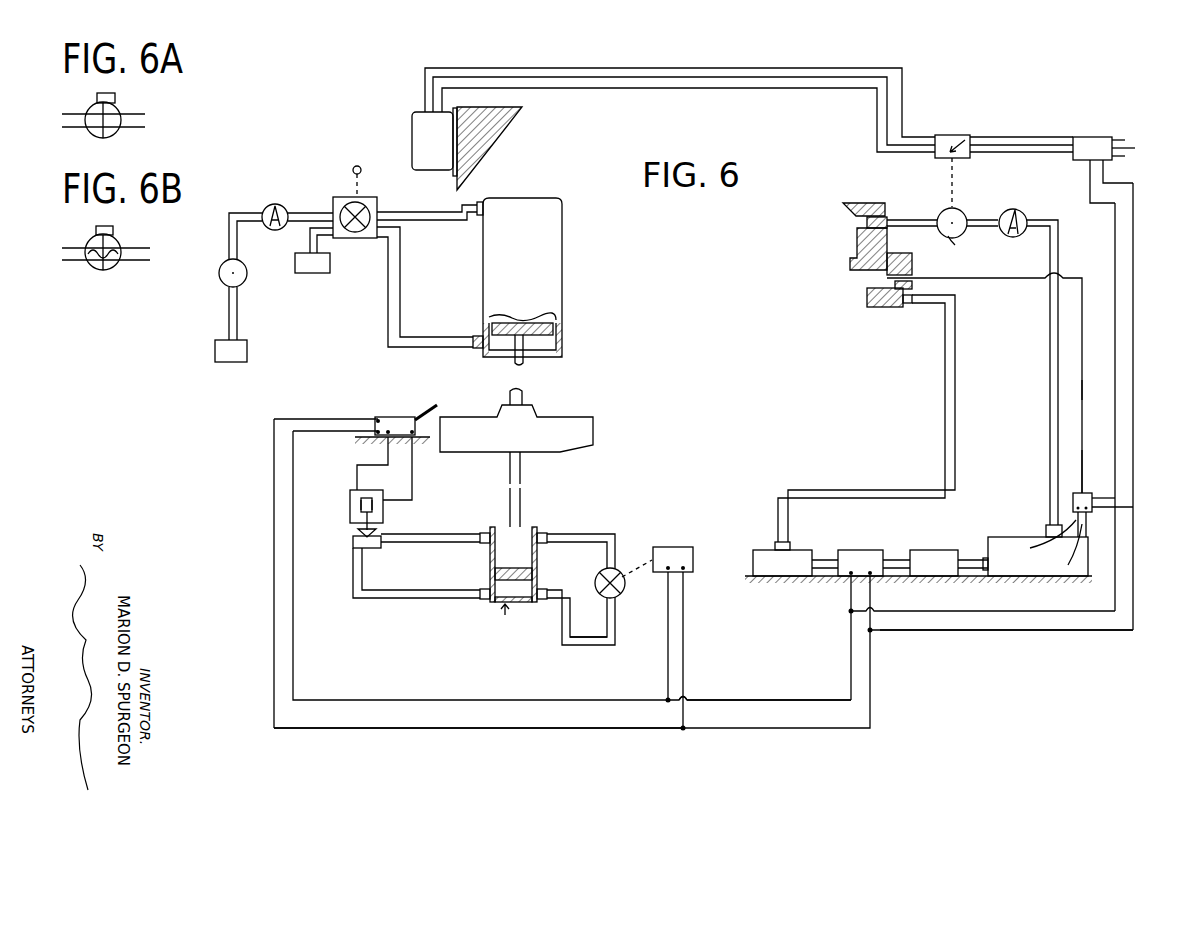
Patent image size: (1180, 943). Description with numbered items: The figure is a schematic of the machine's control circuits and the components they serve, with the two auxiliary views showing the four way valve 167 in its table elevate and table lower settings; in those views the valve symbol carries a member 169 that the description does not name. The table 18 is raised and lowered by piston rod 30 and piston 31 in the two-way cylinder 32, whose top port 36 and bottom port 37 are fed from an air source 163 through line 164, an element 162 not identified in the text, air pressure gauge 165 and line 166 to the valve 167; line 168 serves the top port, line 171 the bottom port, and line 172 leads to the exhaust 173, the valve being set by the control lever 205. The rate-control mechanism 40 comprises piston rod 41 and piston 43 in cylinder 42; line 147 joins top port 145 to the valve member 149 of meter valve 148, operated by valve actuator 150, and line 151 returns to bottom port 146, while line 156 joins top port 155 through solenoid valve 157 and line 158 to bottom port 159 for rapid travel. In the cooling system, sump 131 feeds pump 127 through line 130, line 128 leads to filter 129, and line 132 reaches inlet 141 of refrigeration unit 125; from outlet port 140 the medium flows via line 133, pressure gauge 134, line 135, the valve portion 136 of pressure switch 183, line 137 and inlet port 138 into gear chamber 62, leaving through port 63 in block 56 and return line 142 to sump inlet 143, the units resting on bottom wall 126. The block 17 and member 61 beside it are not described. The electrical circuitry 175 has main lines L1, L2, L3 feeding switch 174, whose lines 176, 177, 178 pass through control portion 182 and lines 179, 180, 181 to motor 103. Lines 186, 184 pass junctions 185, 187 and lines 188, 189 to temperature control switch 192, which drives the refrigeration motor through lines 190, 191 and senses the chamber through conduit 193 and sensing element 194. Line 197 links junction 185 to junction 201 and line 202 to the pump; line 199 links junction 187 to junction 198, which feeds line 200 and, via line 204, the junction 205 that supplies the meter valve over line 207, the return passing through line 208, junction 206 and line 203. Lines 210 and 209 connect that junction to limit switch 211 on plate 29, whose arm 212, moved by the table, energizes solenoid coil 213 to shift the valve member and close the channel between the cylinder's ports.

In FIG. 6, the block 17 is at (857, 248).
In FIG. 6, the table 18 is at (574, 421).
In FIG. 6, the back plate 29 is at (368, 440).
In FIG. 6, the piston rod 30 is at (523, 363).
In FIG. 6, the piston 31 is at (552, 332).
In FIG. 6, the two-way acting cylinder 32 is at (548, 252).
In FIG. 6, the top port 36 is at (479, 216).
In FIG. 6, the bottom port 37 is at (474, 348).
In FIG. 6, the rate-controlling mechanism 40 is at (503, 620).
In FIG. 6, the piston rod 41 is at (521, 470).
In FIG. 6, the two way acting cylinder 42 is at (528, 532).
In FIG. 6, the piston 43 is at (534, 571).
In FIG. 6, the block 56 is at (876, 307).
In FIG. 6, the block 61 is at (893, 258).
In FIG. 6, the gear chamber 62 is at (865, 203).
In FIG. 6, the port 63 is at (906, 304).
In FIG. 6, the motor 103 is at (412, 135).
In FIG. 6, the refrigeration unit 125 is at (1088, 562).
In FIG. 6, the bottom wall 126 is at (786, 578).
In FIG. 6, the pump 127 is at (856, 550).
In FIG. 6, the line 128 is at (892, 560).
In FIG. 6, the filter 129 is at (940, 556).
In FIG. 6, the line 130 is at (826, 578).
In FIG. 6, the sump 131 is at (798, 556).
In FIG. 6, the line 132 is at (975, 576).
In FIG. 6, the line 133 is at (1050, 388).
In FIG. 6, the pressure gauge 134 is at (1022, 218).
In FIG. 6, the line 135 is at (984, 222).
In FIG. 6, the valve portion 136 is at (958, 250).
In FIG. 6, the line 137 is at (938, 224).
In FIG. 6, the drive chamber inlet port 138 is at (882, 222).
In FIG. 6, the outlet port 140 is at (1046, 531).
In FIG. 6, the inlet 141 is at (988, 576).
In FIG. 6, the return line 142 is at (945, 386).
In FIG. 6, the inlet port 143 is at (775, 546).
In FIG. 6, the top port 145 is at (546, 536).
In FIG. 6, the bottom port 146 is at (543, 600).
In FIG. 6, the line 147 is at (592, 536).
In FIG. 6, the meter valve 148 is at (686, 547).
In FIG. 6, the valve member 149 is at (614, 570).
In FIG. 6, the valve actuator 150 is at (657, 573).
In FIG. 6, the line 151 is at (612, 636).
In FIG. 6, the top port 155 is at (486, 544).
In FIG. 6, the line 156 is at (446, 534).
In FIG. 6, the solenoid valve 157 is at (370, 498).
In FIG. 6, the line 158 is at (380, 599).
In FIG. 6, the bottom port 159 is at (482, 600).
In FIG. 6, the valve 162 is at (219, 278).
In FIG. 6, the source of pressurized air 163 is at (247, 352).
In FIG. 6, the line 164 is at (240, 318).
In FIG. 6, the air pressure gauge 165 is at (262, 212).
In FIG. 6A, the line 166 is at (74, 112).
In FIG. 6B, the line 166 is at (78, 246).
In FIG. 6, the line 166 is at (304, 212).
In FIG. 6, the four way valve 167 is at (355, 238).
In FIG. 6A, the line 168 is at (140, 117).
In FIG. 6B, the line 168 is at (142, 250).
In FIG. 6, the line 168 is at (437, 216).
In FIG. 6A, the valve stem 169 is at (118, 98).
In FIG. 6B, the valve stem 169 is at (112, 230).
In FIG. 6A, the line 171 is at (122, 128).
In FIG. 6B, the line 171 is at (126, 262).
In FIG. 6, the line 171 is at (388, 334).
In FIG. 6A, the line 172 is at (78, 126).
In FIG. 6B, the line 172 is at (78, 258).
In FIG. 6, the line 172 is at (310, 238).
In FIG. 6, the exhaust 173 is at (311, 274).
In FIG. 6, the On-Off two speed motor control switch 174 is at (1098, 138).
In FIG. 6, the electrical control circuitry 175 is at (1118, 170).
In FIG. 6, the line 176 is at (992, 150).
In FIG. 6, the line 177 is at (1022, 143).
In FIG. 6, the line 178 is at (1046, 137).
In FIG. 6, the line 179 is at (680, 62).
In FIG. 6, the line 180 is at (694, 82).
In FIG. 6, the line 181 is at (733, 68).
In FIG. 6, the electrical control portion 182 is at (946, 135).
In FIG. 6, the pressure switch 183 is at (968, 134).
In FIG. 6, the line 184 is at (1133, 272).
In FIG. 6, the junction 185 is at (1118, 497).
In FIG. 6, the line 186 is at (1115, 320).
In FIG. 6, the junction 187 is at (1134, 507).
In FIG. 6, the line 188 is at (1090, 493).
In FIG. 6, the line 189 is at (1088, 516).
In FIG. 6, the line 190 is at (1038, 540).
In FIG. 6, the line 191 is at (1061, 550).
In FIG. 6, the temperature control switch 192 is at (1082, 478).
In FIG. 6, the conduit 193 is at (1083, 400).
In FIG. 6, the temperature sensing element 194 is at (887, 279).
In FIG. 6, the line 197 is at (1030, 631).
In FIG. 6, the junction 198 is at (871, 631).
In FIG. 6, the line 199 is at (974, 631).
In FIG. 6, the line 200 is at (870, 607).
In FIG. 6, the junction 201 is at (851, 612).
In FIG. 6, the line 202 is at (851, 594).
In FIG. 6, the line 203 is at (766, 700).
In FIG. 6, the line 204 is at (378, 541).
In FIG. 6, the control lever 205 is at (357, 166).
In FIG. 6, the junction 206 is at (668, 702).
In FIG. 6, the line 207 is at (684, 700).
In FIG. 6, the line 208 is at (667, 699).
In FIG. 6, the line 209 is at (482, 729).
In FIG. 6, the line 210 is at (482, 701).
In FIG. 6, the limit switch 211 is at (382, 417).
In FIG. 6, the switch arm 212 is at (430, 412).
In FIG. 6, the solenoid coil 213 is at (412, 492).
In FIG. 6, the main line L1 is at (1125, 141).
In FIG. 6, the main line L2 is at (1136, 149).
In FIG. 6, the main line L3 is at (1125, 157).